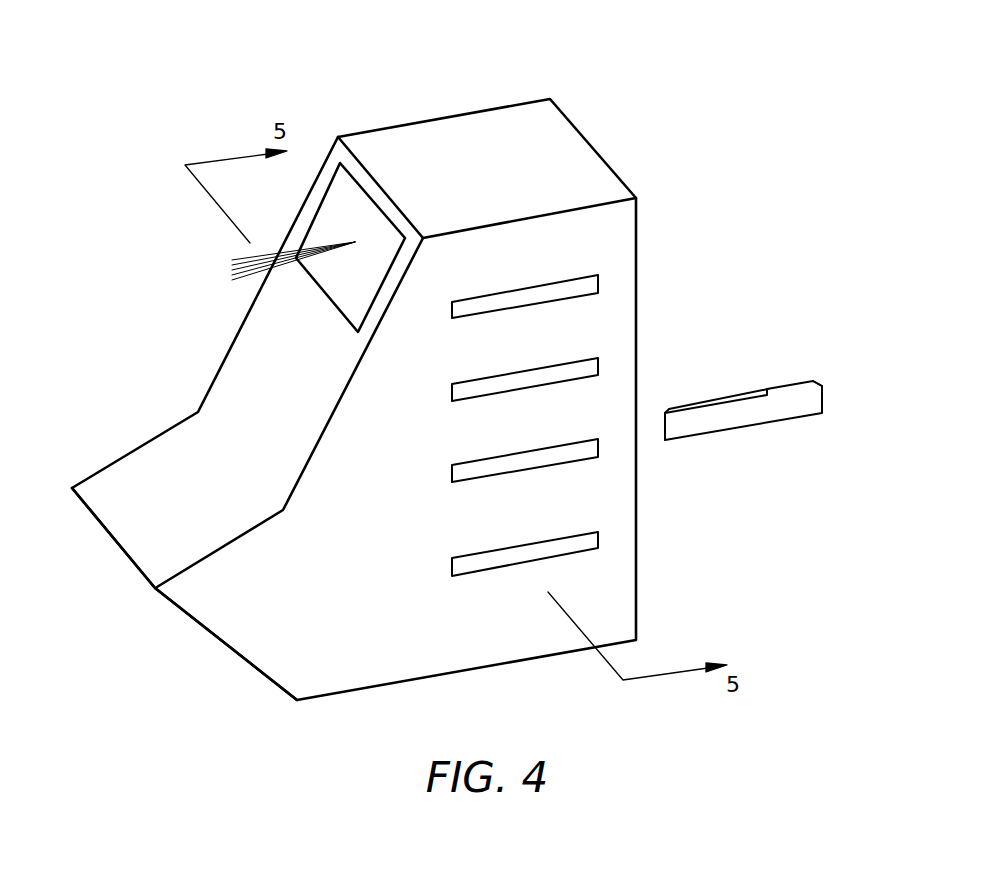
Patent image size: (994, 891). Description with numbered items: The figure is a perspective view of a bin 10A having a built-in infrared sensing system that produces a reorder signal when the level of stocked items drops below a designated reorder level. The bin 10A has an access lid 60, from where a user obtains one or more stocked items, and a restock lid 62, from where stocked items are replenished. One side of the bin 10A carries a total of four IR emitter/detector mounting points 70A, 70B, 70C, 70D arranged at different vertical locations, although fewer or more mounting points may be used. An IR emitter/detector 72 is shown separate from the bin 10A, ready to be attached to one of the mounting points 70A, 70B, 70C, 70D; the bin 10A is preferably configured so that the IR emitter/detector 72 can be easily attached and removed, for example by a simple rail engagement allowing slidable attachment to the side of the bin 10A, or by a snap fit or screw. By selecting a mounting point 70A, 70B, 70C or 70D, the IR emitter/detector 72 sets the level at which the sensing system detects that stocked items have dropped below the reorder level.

The bin 10A is at (562, 87).
The access lid 60 is at (175, 551).
The restock lid 62 is at (352, 231).
The IR emitter/detector mounting point 70A is at (598, 280).
The IR emitter/detector mounting point 70B is at (598, 367).
The IR emitter/detector mounting point 70C is at (598, 445).
The IR emitter/detector mounting point 70D is at (598, 540).
The IR emitter/detector 72 is at (797, 405).